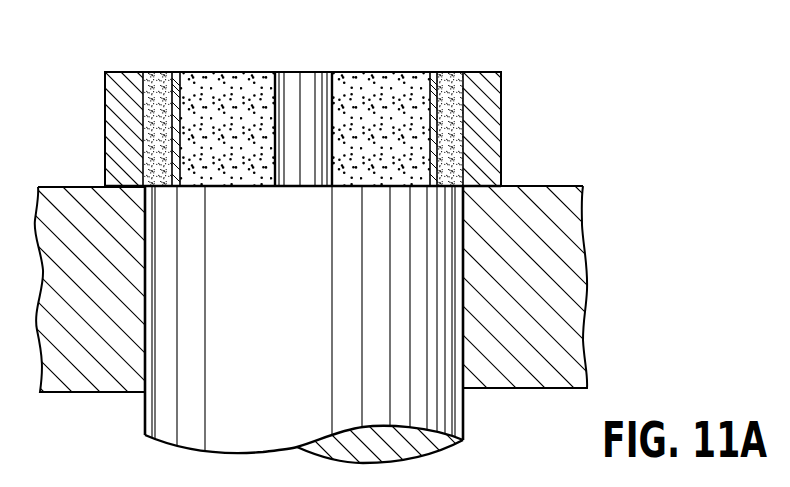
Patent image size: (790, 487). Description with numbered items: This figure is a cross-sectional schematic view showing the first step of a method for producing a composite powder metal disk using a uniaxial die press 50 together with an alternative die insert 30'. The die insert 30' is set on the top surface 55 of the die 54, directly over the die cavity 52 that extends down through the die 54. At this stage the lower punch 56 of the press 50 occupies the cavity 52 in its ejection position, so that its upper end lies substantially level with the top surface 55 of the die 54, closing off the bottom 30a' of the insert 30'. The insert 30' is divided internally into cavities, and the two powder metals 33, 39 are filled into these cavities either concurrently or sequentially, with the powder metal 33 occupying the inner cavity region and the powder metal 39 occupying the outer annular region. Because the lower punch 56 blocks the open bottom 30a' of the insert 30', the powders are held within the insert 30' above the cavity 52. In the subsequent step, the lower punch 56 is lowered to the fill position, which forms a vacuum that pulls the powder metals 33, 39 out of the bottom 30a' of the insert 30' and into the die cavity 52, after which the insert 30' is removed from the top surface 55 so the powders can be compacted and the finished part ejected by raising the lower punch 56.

The die insert 30' is at (352, 145).
The bottom of the insert 30a' is at (303, 213).
The powder metal 33 is at (225, 113).
The powder metal 39 is at (162, 82).
The uniaxial die press 50 is at (652, 128).
The die cavity 52 is at (146, 315).
The die 54 is at (560, 285).
The top surface of the die 55 is at (560, 184).
The lower punch 56 is at (299, 418).